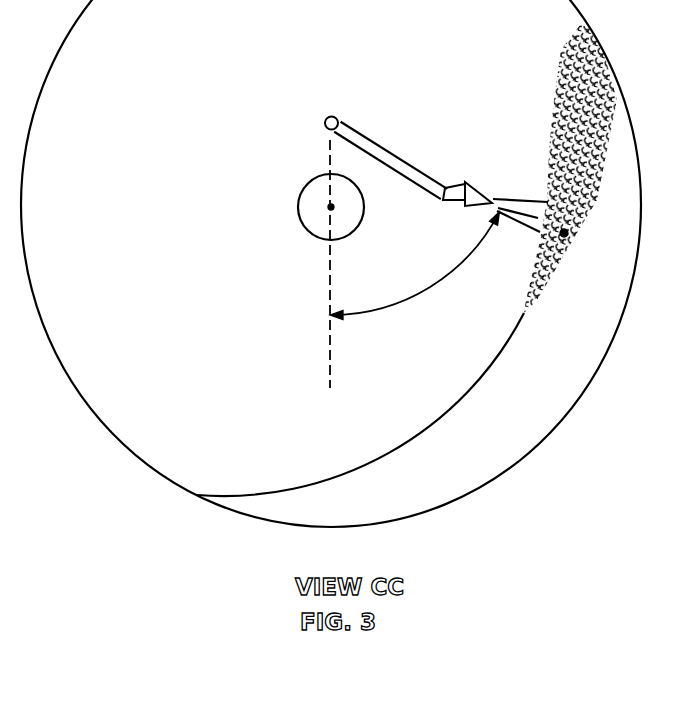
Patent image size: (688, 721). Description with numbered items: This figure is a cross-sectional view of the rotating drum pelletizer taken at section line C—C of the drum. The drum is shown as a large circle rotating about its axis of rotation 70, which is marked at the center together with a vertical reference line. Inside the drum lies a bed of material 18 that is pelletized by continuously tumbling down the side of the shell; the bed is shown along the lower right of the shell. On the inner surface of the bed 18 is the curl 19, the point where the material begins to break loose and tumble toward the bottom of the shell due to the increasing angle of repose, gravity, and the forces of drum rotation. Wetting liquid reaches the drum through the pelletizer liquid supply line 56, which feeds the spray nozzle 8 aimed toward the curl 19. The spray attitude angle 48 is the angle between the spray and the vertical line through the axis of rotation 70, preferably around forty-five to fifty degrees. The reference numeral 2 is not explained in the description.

The tubular structure 2 is at (302, 220).
The spray nozzle 8 is at (471, 206).
The bed of material 18 is at (504, 422).
The curl 19 is at (592, 240).
The spray attitude angle 48 is at (415, 300).
The pelletizer liquid supply line 56 is at (325, 125).
The axis of rotation 70 is at (331, 207).